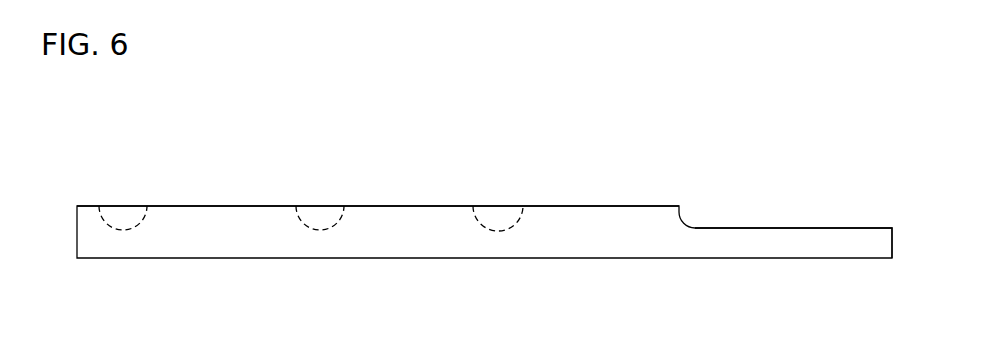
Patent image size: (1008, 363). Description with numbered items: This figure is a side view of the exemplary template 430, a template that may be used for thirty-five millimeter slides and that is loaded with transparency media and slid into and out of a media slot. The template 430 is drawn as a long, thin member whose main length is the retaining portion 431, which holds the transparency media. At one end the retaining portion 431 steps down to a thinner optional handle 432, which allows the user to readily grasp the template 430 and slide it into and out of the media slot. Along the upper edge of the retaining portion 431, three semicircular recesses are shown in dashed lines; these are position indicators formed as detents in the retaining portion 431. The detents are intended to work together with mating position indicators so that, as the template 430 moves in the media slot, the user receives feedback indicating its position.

The template 430 is at (609, 164).
The retaining portion 431 is at (203, 206).
The handle 432 is at (727, 228).